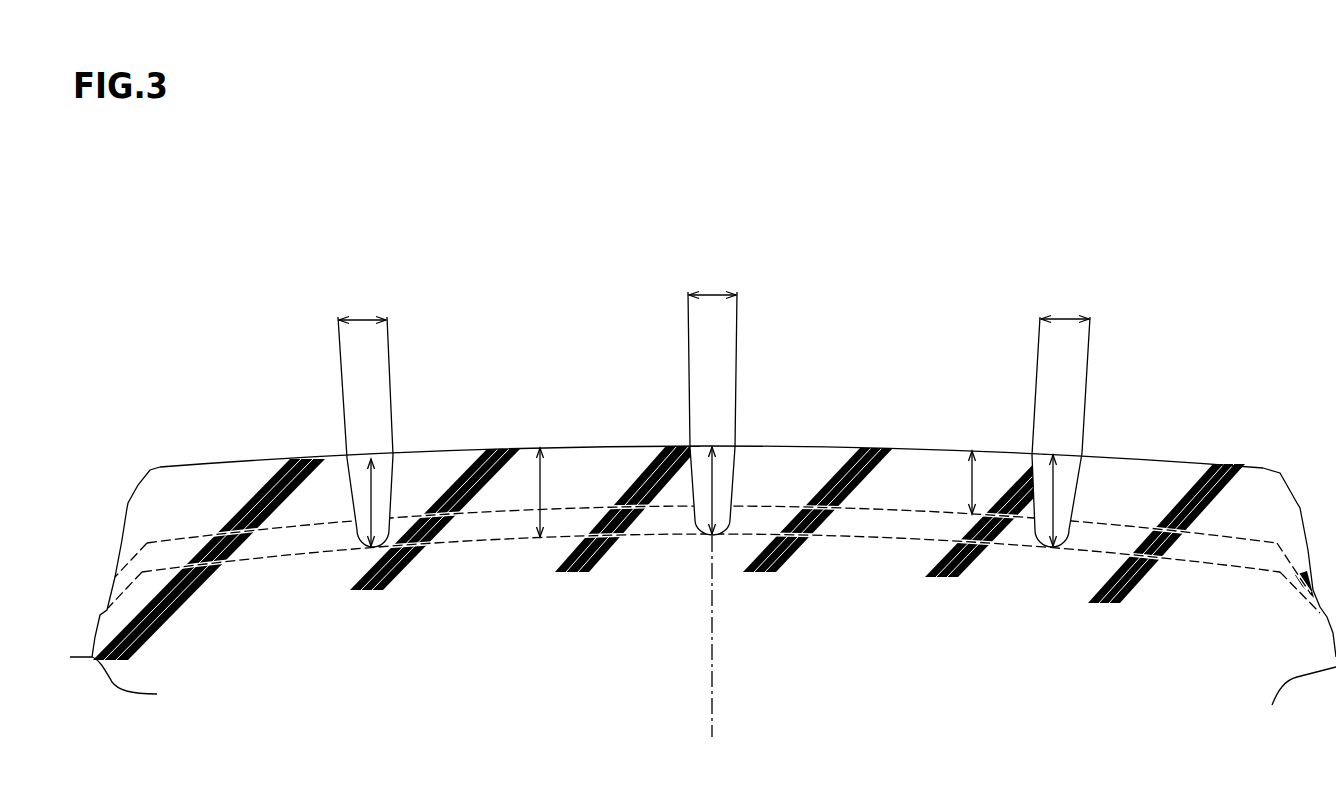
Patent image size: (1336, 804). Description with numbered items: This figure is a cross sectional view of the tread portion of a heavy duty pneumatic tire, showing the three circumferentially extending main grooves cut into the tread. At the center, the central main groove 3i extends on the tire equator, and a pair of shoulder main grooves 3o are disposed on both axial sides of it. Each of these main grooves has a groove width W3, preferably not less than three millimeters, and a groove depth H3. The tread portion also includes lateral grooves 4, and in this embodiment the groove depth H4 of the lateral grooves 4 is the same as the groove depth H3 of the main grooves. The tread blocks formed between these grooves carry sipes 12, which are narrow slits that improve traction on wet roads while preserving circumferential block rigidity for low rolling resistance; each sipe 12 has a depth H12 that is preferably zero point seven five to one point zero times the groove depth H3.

The shoulder main groove 3o is at (363, 452).
The central main groove 3i is at (708, 440).
The lateral groove 4 is at (482, 541).
The sipe 12 is at (896, 508).
The groove width of the main grooves W3 is at (714, 362).
The groove depth of the main grooves H3 is at (373, 500).
The groove depth of the lateral grooves H4 is at (538, 490).
The sipe depth H12 is at (973, 513).